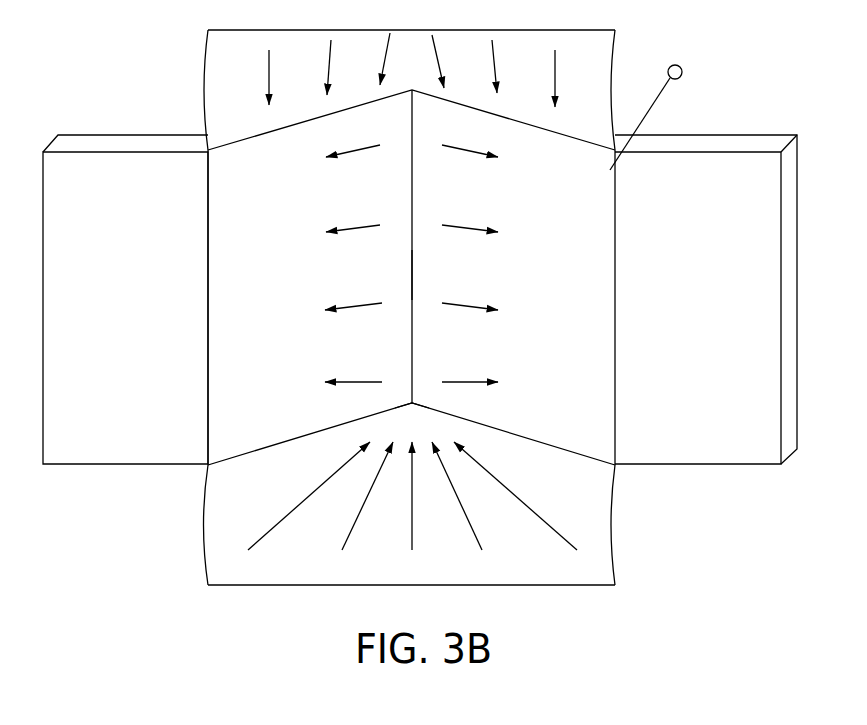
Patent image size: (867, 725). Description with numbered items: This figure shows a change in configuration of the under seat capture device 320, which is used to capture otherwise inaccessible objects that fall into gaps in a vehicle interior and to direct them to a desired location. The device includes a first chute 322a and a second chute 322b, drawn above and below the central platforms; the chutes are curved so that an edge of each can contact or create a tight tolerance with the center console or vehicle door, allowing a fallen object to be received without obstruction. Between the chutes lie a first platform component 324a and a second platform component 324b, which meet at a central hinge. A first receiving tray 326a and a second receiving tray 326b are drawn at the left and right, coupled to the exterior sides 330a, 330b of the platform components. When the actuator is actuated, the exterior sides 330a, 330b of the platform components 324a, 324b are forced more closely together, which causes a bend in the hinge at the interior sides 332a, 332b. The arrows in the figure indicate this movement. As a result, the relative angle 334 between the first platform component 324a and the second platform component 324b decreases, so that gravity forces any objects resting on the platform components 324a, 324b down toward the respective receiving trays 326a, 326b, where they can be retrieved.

The under seat capture device 320 is at (172, 503).
The first chute 322a is at (213, 75).
The second chute 322b is at (594, 521).
The first platform component 324a is at (300, 421).
The second platform component 324b is at (583, 421).
The first receiving tray 326a is at (143, 327).
The second receiving tray 326b is at (740, 327).
The exterior side of first platform component 330a is at (215, 310).
The exterior side of second platform component 330b is at (608, 309).
The interior side of first platform component 332a is at (403, 277).
The interior side of second platform component 332b is at (422, 277).
The relative angle 334 is at (429, 418).